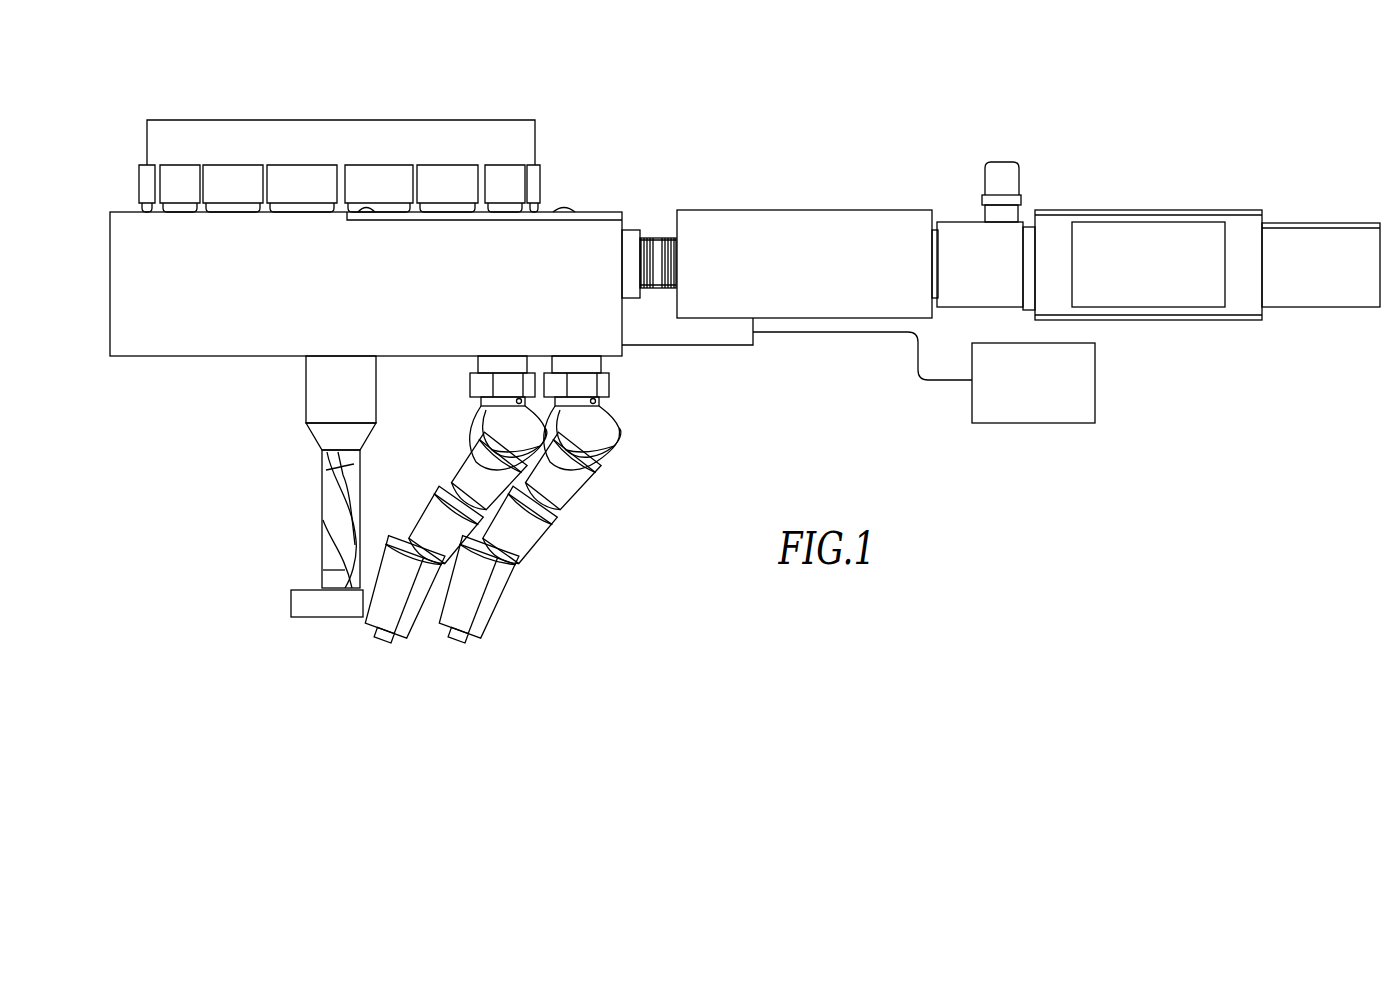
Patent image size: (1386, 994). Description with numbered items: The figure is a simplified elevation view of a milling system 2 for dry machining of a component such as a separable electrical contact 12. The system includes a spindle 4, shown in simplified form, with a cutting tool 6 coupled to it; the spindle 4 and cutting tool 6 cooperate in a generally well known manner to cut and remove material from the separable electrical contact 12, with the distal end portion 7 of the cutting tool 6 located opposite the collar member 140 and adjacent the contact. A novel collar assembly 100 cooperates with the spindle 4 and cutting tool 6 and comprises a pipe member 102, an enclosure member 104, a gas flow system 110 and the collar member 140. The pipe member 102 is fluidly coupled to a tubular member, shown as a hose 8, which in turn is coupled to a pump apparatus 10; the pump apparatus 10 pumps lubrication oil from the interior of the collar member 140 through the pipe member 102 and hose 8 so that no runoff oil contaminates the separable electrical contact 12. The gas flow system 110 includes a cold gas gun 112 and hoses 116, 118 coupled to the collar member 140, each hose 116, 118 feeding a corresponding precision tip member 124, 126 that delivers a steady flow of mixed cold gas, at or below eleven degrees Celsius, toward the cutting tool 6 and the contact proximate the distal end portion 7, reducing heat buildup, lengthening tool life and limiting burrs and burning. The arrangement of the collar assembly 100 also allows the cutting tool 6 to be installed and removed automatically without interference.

The milling system 2 is at (990, 99).
The spindle 4 is at (407, 120).
The cutting tool 6 is at (304, 460).
The distal end portion 7 is at (330, 597).
The hose 8 is at (913, 356).
The pump apparatus 10 is at (1096, 380).
The separable electrical contact 12 is at (292, 603).
The collar assembly 100 is at (772, 140).
The pipe member 102 is at (675, 340).
The enclosure member 104 is at (560, 211).
The gas flow system 110 is at (762, 380).
The cold gas gun 112 is at (848, 218).
The hose 116 is at (419, 516).
The hose 118 is at (510, 518).
The precision tip member 124 is at (357, 634).
The precision tip member 126 is at (444, 641).
The collar member 140 is at (181, 349).